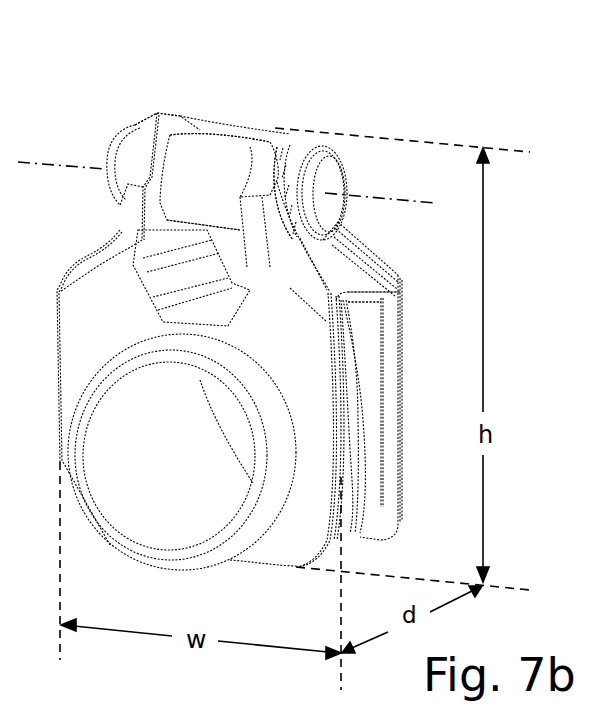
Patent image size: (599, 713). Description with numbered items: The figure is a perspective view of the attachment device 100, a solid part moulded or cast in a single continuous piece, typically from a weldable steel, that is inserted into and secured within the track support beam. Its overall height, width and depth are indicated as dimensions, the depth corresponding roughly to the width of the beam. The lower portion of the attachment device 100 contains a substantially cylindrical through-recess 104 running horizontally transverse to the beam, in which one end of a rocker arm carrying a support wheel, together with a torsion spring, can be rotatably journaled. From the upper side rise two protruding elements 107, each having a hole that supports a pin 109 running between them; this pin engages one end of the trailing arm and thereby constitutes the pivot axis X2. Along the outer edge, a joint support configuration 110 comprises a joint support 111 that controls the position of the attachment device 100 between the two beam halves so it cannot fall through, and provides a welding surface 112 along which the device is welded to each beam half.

The attachment device 100 is at (362, 96).
The recess 104 is at (178, 498).
The protruding elements 107 is at (288, 130).
The pin 109 is at (217, 164).
The joint support configuration 110 is at (401, 273).
The joint support 111 is at (349, 302).
The welding surface 112 is at (349, 291).
The axis X2 is at (75, 168).